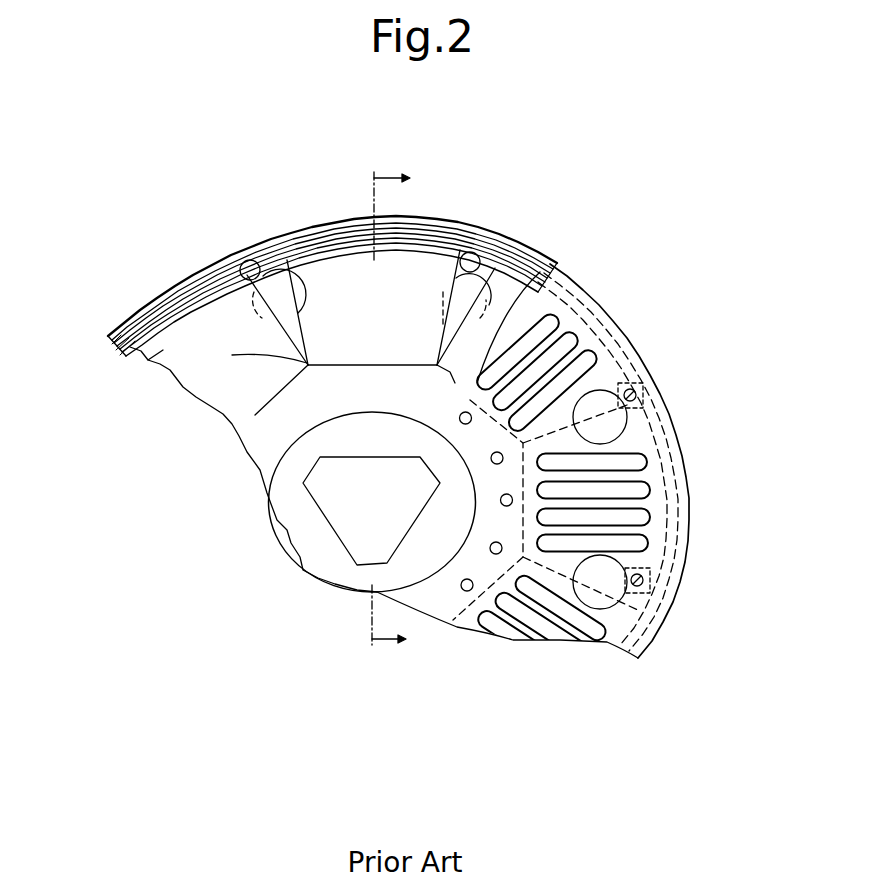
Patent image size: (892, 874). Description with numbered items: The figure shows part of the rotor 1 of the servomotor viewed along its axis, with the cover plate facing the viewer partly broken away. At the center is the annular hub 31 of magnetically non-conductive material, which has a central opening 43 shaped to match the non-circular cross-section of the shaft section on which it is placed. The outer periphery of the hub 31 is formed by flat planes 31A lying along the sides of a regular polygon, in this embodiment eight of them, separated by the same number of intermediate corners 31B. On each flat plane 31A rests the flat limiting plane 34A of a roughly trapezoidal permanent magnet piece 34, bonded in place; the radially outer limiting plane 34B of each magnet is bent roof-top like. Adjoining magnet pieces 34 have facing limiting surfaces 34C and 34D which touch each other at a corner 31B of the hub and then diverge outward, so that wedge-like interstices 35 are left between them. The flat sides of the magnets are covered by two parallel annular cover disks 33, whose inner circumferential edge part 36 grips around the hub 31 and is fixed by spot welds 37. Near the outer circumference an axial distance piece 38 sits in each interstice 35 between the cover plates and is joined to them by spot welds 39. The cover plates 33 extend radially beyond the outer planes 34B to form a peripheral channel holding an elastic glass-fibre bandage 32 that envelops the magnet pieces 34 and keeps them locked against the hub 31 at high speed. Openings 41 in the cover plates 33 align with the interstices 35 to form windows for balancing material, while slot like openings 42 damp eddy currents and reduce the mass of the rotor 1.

The rotor 1 is at (175, 266).
The hub 31 is at (268, 462).
The flat planes 31A is at (260, 413).
The corners 31B is at (232, 355).
The elastic bandage 32 is at (140, 303).
The cover disks 33 is at (572, 323).
The permanent magnet piece 34 is at (311, 250).
The flat limiting plane 34A is at (341, 364).
The radially outer limiting plane 34B is at (368, 250).
The limiting surface 34C is at (285, 278).
The limiting surface 34D is at (436, 360).
The interstices 35 is at (270, 258).
The inner circumferential edge part 36 is at (485, 508).
The spot welds 37 is at (497, 551).
The axial distance piece 38 is at (244, 260).
The spot welds 39 is at (636, 391).
The openings 41 is at (625, 422).
The slot like openings 42 is at (577, 342).
The central opening 43 is at (327, 510).